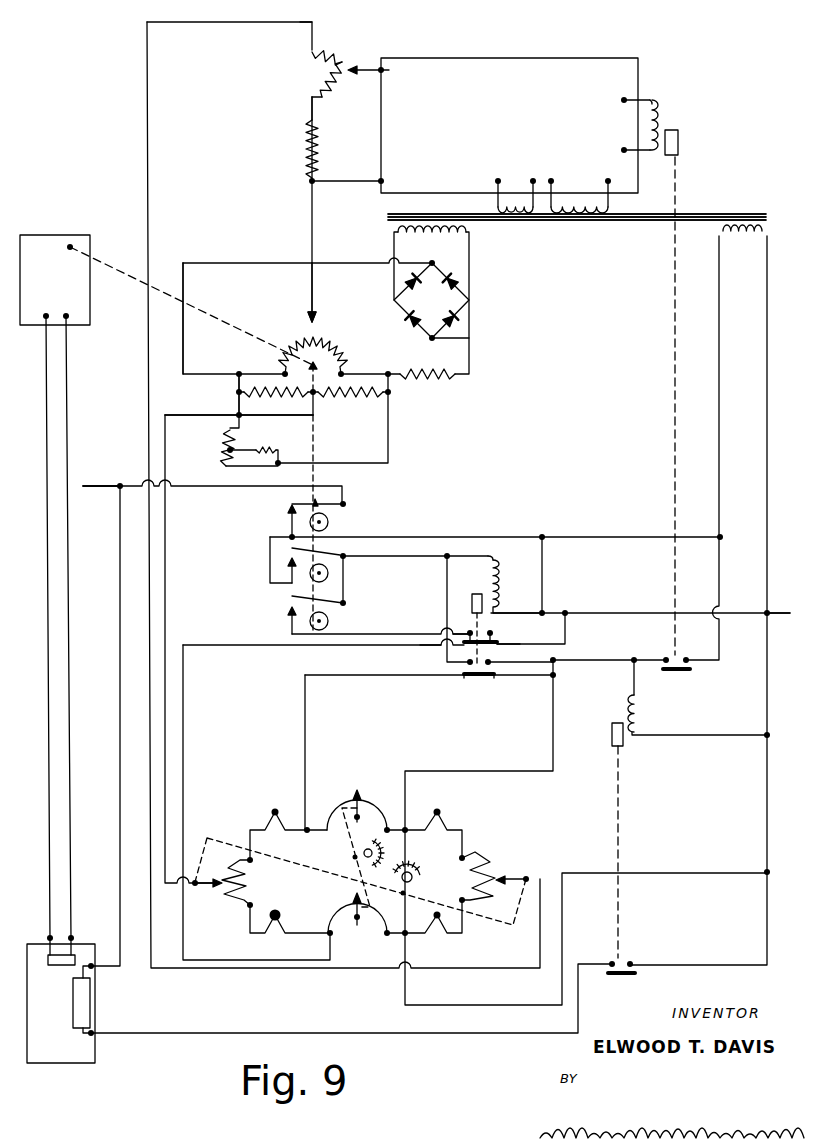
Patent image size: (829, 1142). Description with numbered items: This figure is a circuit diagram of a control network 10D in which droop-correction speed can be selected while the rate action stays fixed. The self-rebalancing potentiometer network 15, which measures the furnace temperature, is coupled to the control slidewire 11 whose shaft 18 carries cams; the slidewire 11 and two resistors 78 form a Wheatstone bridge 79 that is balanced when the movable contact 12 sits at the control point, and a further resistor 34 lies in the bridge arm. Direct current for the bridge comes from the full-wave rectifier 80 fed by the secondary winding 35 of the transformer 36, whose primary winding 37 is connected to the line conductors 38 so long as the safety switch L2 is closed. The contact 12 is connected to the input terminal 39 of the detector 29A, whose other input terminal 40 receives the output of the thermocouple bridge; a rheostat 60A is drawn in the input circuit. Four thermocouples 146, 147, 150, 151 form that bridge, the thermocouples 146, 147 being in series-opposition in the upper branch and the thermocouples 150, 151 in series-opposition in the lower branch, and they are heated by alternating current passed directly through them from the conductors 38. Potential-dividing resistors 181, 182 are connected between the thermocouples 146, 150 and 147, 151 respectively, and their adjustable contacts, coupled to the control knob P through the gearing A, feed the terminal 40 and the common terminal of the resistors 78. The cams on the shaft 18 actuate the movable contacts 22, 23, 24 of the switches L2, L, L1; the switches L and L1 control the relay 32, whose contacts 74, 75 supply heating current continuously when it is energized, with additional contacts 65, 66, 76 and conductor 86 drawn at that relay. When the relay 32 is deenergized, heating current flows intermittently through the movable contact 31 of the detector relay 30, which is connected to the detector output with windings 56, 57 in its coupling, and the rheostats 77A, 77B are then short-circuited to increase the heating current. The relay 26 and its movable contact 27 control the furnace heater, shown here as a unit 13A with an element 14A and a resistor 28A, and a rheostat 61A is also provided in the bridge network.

The input terminal 40 is at (314, 20).
The rheostat 60A is at (340, 50).
The input terminal 39 is at (310, 184).
The detector 29A is at (526, 86).
The detector relay 30 is at (660, 115).
The transformer primary winding 56 is at (495, 207).
The transformer primary winding 57 is at (611, 207).
The transformer 36 is at (596, 250).
The secondary winding 35 is at (462, 234).
The primary winding 37 is at (744, 236).
The full-wave rectifier 80 is at (443, 310).
The shaft 18 is at (217, 294).
The control slidewire 11 is at (310, 318).
The movable contact 12 is at (318, 300).
The Wheatstone bridge 79 is at (325, 362).
The resistor 34 is at (425, 380).
The resistors 78 is at (280, 402).
The rheostat 61A is at (215, 458).
The power line conductors 38 is at (96, 484).
The self-rebalancing potentiometer network 15 is at (64, 293).
The control network 10D is at (215, 592).
The movable contact 22 is at (346, 506).
The movable contact 23 is at (333, 552).
The movable contact 24 is at (346, 592).
The relay 32 is at (508, 584).
The contact 65 is at (444, 634).
The fixed contacts 66 is at (472, 625).
The conductor 86 is at (420, 647).
The contacts 75 is at (466, 663).
The contacts 76 is at (466, 678).
The contact 74 is at (494, 677).
The movable contact 31 is at (690, 670).
The relay 26 is at (647, 706).
The movable contact structure 27 is at (636, 975).
The rheostat 77A is at (383, 805).
The rheostat 77B is at (335, 910).
The thermocouple 146 is at (272, 813).
The thermocouple 147 is at (440, 813).
The thermocouple 150 is at (282, 920).
The thermocouple 151 is at (432, 917).
The potential-dividing resistor 181 is at (236, 906).
The potential-dividing resistor 182 is at (478, 860).
The gear A is at (356, 856).
The control knob P is at (400, 875).
The control switch L is at (288, 551).
The control switch L1 is at (289, 599).
The safety switch L2 is at (289, 504).
The recorder unit 13A is at (86, 1093).
The element 14A is at (55, 966).
The resistor 28A is at (70, 1010).